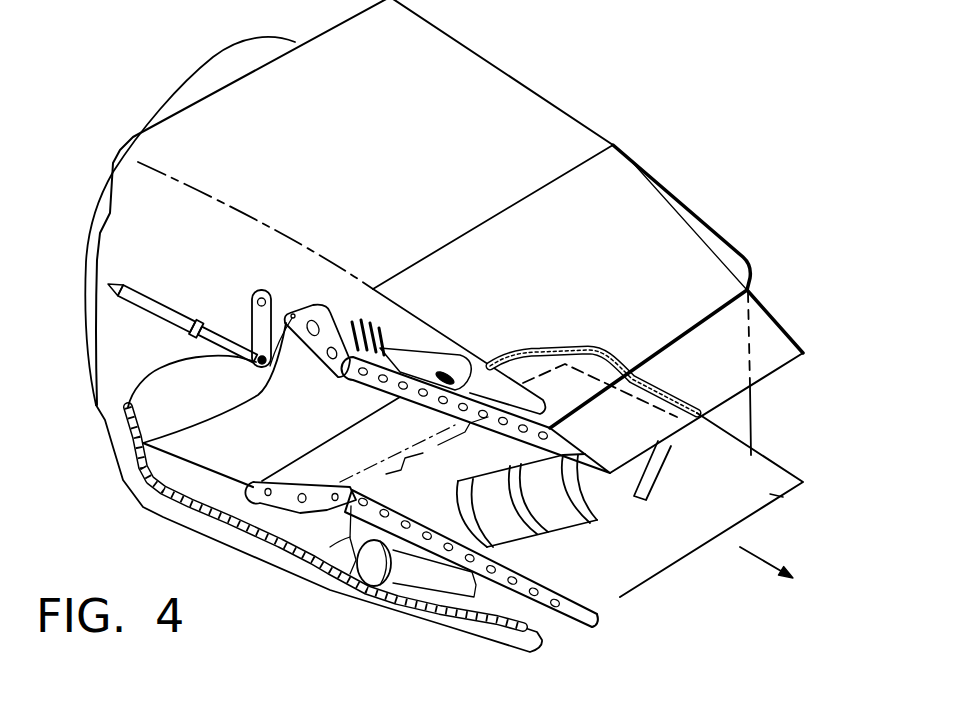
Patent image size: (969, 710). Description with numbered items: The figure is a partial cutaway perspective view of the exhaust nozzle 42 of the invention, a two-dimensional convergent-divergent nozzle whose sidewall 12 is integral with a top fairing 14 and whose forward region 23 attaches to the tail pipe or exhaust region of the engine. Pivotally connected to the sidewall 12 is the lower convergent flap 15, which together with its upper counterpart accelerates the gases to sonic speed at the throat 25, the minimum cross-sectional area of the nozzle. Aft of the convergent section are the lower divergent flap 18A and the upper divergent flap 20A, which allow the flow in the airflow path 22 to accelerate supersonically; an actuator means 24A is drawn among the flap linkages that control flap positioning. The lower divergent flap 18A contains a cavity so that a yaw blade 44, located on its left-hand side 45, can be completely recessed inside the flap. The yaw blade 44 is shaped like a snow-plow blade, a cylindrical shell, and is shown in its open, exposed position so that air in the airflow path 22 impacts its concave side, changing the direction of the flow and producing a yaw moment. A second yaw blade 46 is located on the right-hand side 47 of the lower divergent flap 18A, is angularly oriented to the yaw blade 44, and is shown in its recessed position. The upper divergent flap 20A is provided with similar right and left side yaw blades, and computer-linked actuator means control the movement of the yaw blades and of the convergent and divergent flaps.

The sidewall 12 is at (682, 202).
The top fairing 14 is at (400, 122).
The lower convergent flap 15 is at (283, 473).
The lower divergent flap 18A is at (756, 472).
The upper divergent flap 20A is at (565, 446).
The airflow path 22 is at (750, 560).
The forward region 23 is at (210, 73).
The actuator 24A is at (150, 290).
The throat 25 is at (842, 396).
The exhaust nozzle 42 is at (642, 132).
The yaw blade 44 is at (563, 522).
The left-hand side 45 is at (623, 597).
The yaw blade 46 is at (655, 478).
The right-hand side 47 is at (770, 494).